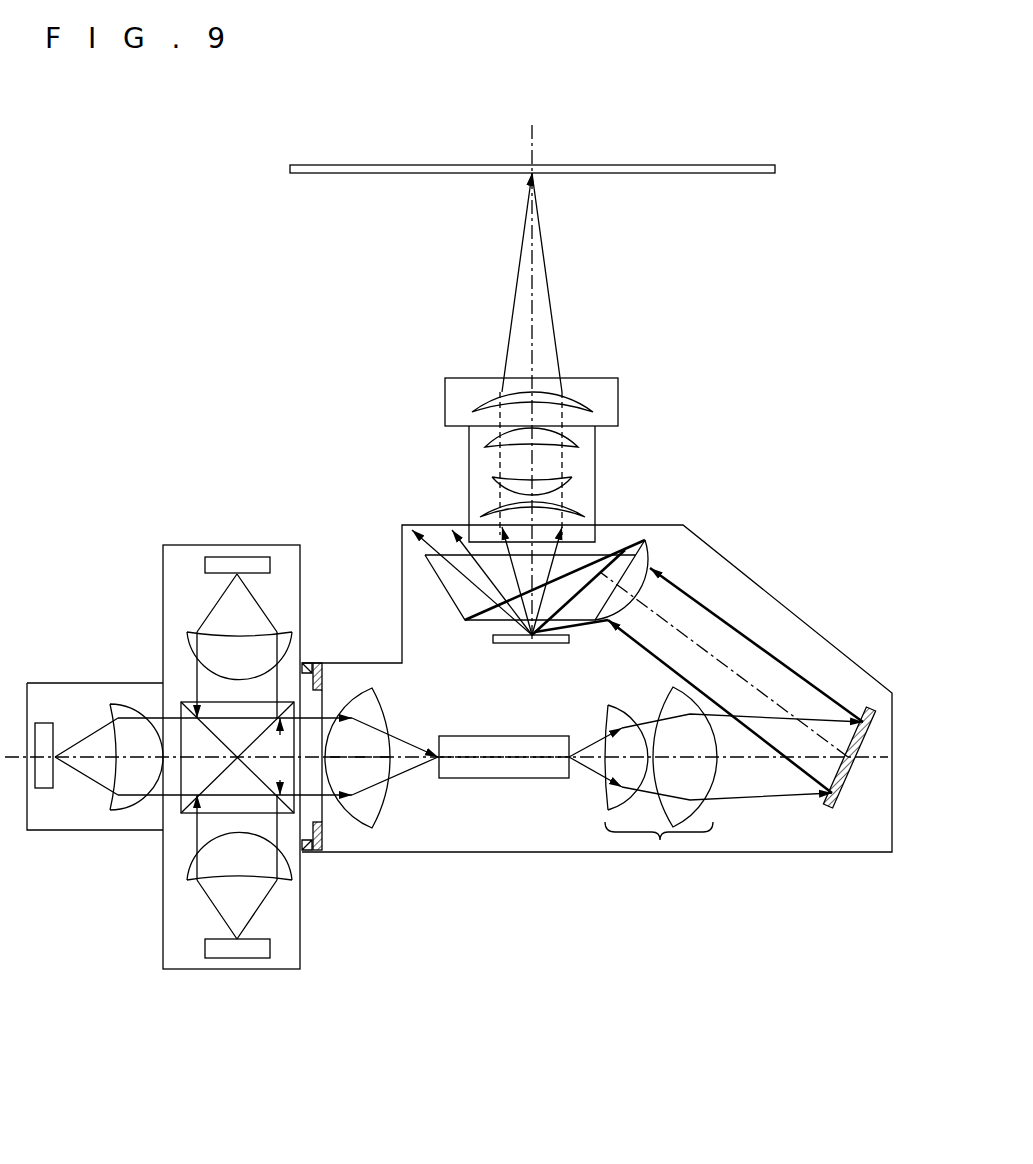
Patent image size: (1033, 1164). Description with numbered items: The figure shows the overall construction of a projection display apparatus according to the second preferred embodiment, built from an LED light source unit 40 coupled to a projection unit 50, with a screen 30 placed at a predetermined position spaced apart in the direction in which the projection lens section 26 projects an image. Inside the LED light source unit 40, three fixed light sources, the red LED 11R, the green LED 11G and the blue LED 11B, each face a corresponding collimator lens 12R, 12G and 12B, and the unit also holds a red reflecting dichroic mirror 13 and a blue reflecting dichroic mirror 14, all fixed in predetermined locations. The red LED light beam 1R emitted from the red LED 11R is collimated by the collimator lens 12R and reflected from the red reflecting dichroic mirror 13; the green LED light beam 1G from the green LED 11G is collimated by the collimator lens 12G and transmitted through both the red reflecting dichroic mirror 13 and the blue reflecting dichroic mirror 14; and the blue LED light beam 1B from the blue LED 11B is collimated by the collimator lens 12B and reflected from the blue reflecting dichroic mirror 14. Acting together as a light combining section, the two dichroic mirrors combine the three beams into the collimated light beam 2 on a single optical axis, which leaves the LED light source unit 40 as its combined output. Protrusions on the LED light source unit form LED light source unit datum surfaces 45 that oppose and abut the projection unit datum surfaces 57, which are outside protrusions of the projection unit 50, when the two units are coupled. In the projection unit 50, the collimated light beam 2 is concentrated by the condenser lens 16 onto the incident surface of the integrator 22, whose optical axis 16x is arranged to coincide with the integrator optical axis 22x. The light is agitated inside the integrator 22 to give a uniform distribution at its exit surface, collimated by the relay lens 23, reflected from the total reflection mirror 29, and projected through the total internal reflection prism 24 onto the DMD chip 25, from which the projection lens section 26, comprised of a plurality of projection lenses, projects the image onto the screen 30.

The screen 30 is at (646, 163).
The projection lens section 26 is at (594, 378).
The total internal reflection prism 24 is at (620, 560).
The projection unit 50 is at (758, 603).
The DMD chip 25 is at (551, 644).
The total reflection mirror 29 is at (843, 778).
The relay lens 23 is at (660, 842).
The integrator 22 is at (548, 770).
The integrator optical axis 22x is at (486, 758).
The condenser lens 16 is at (366, 710).
The optical axis of the condenser lens 16x is at (366, 758).
The LED light source unit datum surfaces 45 is at (304, 662).
The projection unit datum surfaces 57 is at (318, 663).
The LED light source unit 40 is at (178, 578).
The red LED 11R is at (238, 565).
The collimator lens 12R is at (207, 650).
The collimator lens 12G is at (127, 730).
The green LED 11G is at (45, 783).
The red LED light beam 1R is at (197, 690).
The green LED light beam 1G is at (163, 718).
The blue LED light beam 1B is at (197, 823).
The collimated light beam 2 is at (240, 718).
The red reflecting dichroic mirror 13 is at (220, 737).
The blue reflecting dichroic mirror 14 is at (215, 778).
The collimator lens 12B is at (232, 865).
The blue LED 11B is at (237, 952).